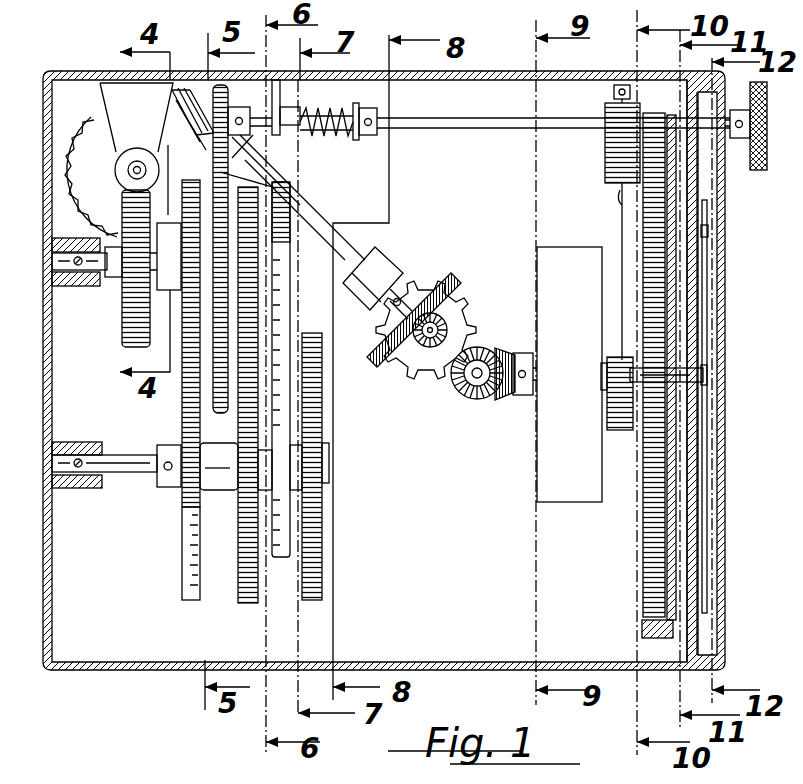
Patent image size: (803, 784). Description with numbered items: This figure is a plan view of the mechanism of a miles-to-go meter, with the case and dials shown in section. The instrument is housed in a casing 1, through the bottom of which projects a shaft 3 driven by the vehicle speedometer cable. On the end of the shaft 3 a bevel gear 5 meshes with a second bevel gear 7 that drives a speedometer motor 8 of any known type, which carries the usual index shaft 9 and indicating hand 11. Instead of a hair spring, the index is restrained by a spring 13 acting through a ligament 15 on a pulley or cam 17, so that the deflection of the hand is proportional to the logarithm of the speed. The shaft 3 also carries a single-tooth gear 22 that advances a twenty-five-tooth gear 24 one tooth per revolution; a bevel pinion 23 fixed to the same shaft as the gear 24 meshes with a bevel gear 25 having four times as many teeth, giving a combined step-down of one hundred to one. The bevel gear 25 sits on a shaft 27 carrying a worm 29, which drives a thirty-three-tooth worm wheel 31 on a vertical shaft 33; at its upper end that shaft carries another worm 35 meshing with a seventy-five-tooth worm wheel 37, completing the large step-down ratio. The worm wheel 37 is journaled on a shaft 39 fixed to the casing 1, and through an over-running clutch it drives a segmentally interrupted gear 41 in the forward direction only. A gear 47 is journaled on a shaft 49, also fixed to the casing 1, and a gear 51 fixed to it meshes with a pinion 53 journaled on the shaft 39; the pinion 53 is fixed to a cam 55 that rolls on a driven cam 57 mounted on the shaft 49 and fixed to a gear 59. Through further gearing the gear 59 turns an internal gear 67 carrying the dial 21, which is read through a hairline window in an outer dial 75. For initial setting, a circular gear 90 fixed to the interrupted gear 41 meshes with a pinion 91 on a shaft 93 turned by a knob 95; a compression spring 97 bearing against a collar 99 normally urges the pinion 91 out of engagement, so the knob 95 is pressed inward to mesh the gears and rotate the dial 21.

The casing 1 is at (43, 376).
The shaft 3 is at (474, 400).
The bevel gear 5 is at (460, 396).
The second bevel gear 7 is at (517, 352).
The speedometer motor 8 is at (578, 502).
The index shaft 9 is at (692, 370).
The indicating hand 11 is at (704, 323).
The spring 13 is at (605, 155).
The ligament 15 is at (621, 228).
The pulley or cam 17 is at (610, 404).
The dial 21 is at (672, 482).
The single-tooth gear 22 is at (503, 400).
The bevel pinion 23 is at (446, 330).
The 25-tooth gear 24 is at (414, 372).
The bevel gear 25 is at (452, 291).
The shaft 27 is at (320, 223).
The worm 29 is at (176, 104).
The worm wheel 31 is at (92, 134).
The vertical shaft 33 is at (138, 160).
The worm 35 is at (116, 174).
The worm wheel 37 is at (126, 332).
The shaft 39 is at (99, 270).
The segmentally interrupted gear 41 is at (190, 177).
The gear 47 is at (182, 553).
The shaft 49 is at (139, 456).
The gear 51 is at (247, 603).
The pinion 53 is at (262, 178).
The cam 55 is at (290, 205).
The driven cam 57 is at (287, 340).
The gear 59 is at (322, 568).
The internal gear 67 is at (647, 462).
The outer dial 75 is at (697, 428).
The circular gear 90 is at (222, 414).
The pinion 91 is at (226, 107).
The shaft 93 is at (471, 128).
The knob 95 is at (758, 171).
The compression spring 97 is at (334, 134).
The collar 99 is at (369, 104).